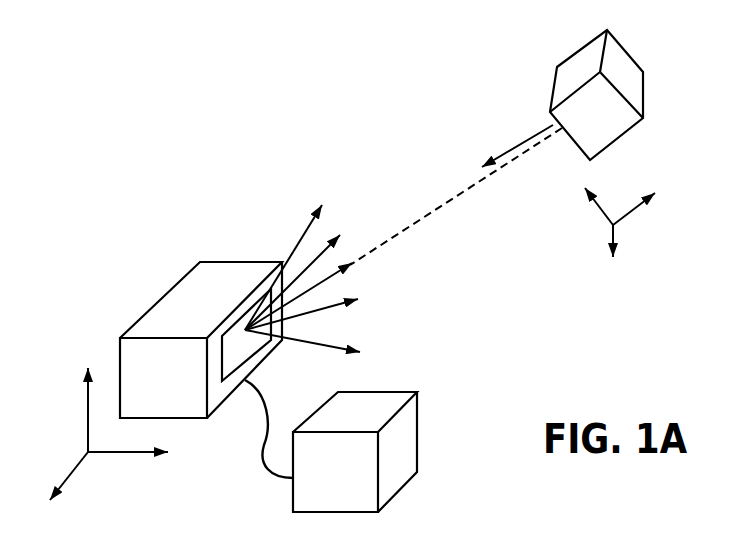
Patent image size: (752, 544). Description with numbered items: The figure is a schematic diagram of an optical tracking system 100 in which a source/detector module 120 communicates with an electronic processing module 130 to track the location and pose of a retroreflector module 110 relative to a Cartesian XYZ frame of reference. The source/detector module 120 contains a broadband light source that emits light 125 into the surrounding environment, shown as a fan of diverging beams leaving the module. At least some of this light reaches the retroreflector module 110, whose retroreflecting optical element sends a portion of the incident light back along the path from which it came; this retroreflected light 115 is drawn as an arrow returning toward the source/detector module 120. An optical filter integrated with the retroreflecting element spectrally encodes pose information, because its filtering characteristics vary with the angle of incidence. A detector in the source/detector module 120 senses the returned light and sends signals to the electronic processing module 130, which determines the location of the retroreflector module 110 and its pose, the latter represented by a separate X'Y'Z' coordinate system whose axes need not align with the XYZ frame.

The optical tracking system 100 is at (186, 161).
The retroreflector module 110 is at (632, 60).
The retroreflected light 115 is at (456, 192).
The source/detector module 120 is at (188, 298).
The light 125 is at (302, 263).
The electronic processing module 130 is at (360, 478).